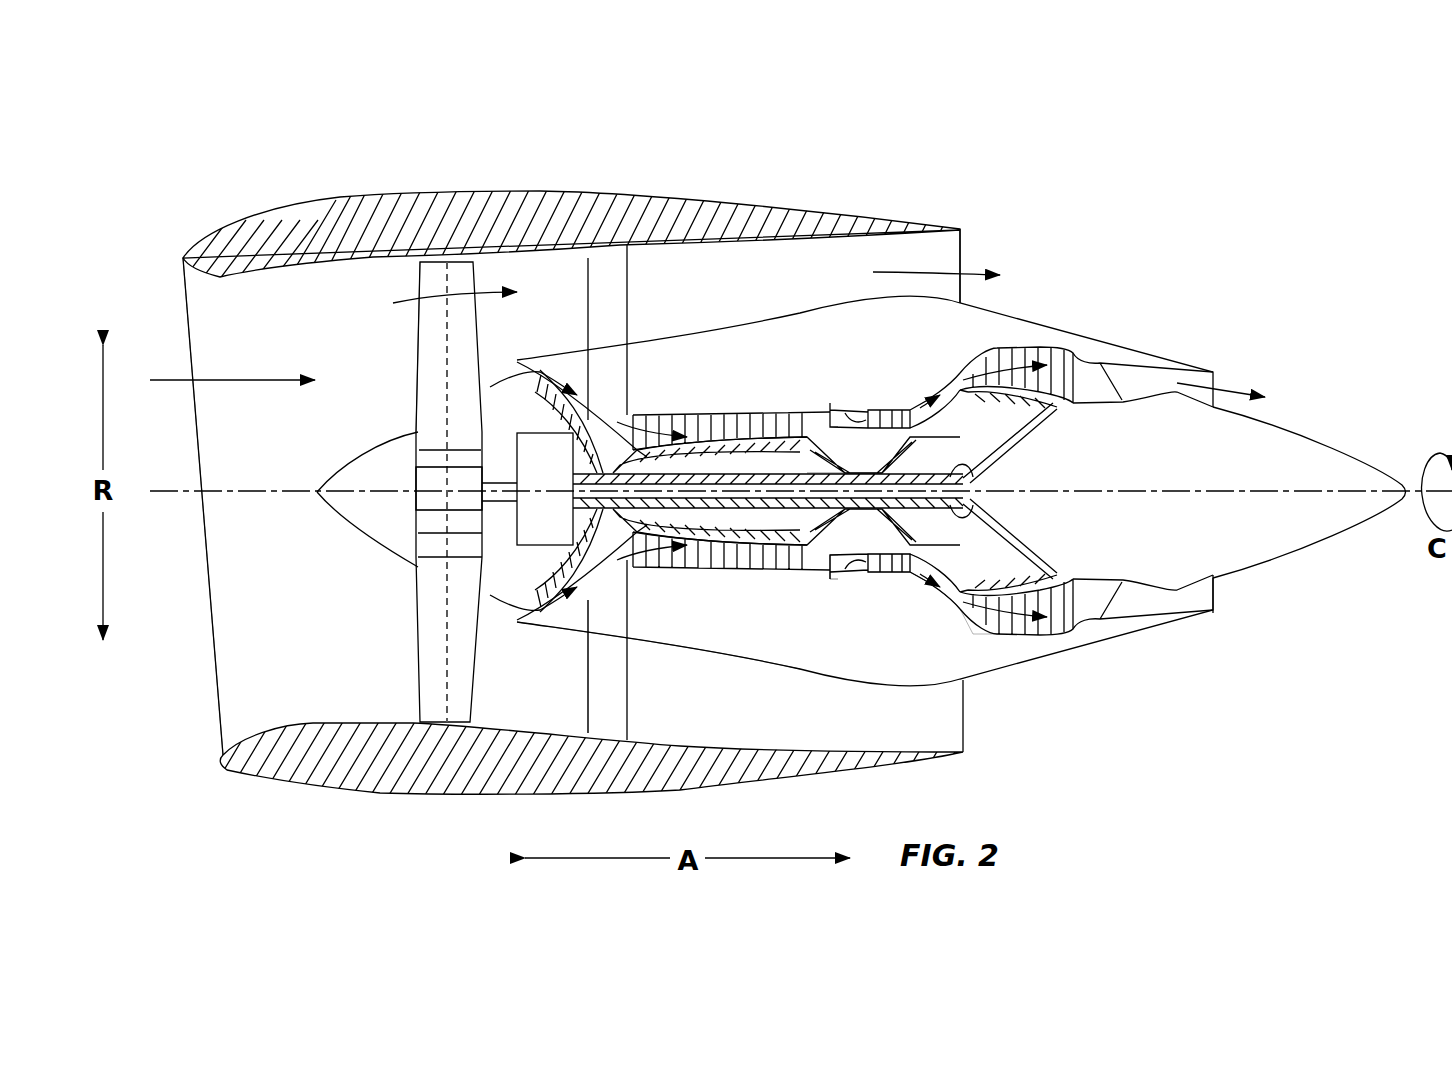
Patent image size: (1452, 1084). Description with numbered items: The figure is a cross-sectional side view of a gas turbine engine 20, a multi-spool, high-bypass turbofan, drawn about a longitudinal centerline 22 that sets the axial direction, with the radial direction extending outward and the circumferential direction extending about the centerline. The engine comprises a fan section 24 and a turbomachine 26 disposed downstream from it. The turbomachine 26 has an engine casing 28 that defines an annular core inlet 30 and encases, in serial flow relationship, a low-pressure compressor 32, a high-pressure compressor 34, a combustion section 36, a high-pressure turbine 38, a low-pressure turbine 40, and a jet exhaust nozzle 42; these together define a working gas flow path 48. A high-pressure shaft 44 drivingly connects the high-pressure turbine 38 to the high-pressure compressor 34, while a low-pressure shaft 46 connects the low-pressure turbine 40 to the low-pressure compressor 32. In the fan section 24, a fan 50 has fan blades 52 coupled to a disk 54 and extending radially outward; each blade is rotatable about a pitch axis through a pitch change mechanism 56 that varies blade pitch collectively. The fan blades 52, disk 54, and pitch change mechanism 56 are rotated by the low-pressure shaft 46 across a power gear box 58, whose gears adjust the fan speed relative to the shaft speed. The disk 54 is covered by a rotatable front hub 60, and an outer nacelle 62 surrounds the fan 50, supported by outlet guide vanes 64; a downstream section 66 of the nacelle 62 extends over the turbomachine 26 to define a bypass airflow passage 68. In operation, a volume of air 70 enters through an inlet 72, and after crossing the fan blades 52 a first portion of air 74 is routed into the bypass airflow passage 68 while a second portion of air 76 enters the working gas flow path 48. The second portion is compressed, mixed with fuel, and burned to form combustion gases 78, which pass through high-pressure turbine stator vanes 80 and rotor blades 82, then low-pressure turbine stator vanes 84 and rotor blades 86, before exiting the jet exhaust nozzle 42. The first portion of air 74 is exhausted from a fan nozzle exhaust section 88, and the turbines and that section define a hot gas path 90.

The gas turbine engine 20 is at (1125, 205).
The longitudinal centerline 22 is at (1150, 490).
The fan section 24 is at (370, 290).
The turbomachine 26 is at (767, 365).
The engine casing 28 is at (810, 672).
The annular core inlet 30 is at (530, 606).
The low-pressure compressor 32 is at (580, 547).
The high-pressure compressor 34 is at (661, 550).
The combustion section 36 is at (843, 575).
The high-pressure turbine 38 is at (915, 570).
The low-pressure turbine 40 is at (1053, 630).
The jet exhaust nozzle 42 is at (1120, 612).
The high-pressure shaft 44 is at (888, 457).
The low-pressure shaft 46 is at (975, 455).
The working gas flow path 48 is at (618, 560).
The fan 50 is at (390, 492).
The fan blades 52 is at (418, 657).
The disk 54 is at (438, 441).
The pitch change mechanism 56 is at (418, 480).
The power gear box 58 is at (600, 414).
The front hub 60 is at (338, 504).
The outer nacelle 62 is at (470, 795).
The outlet guide vanes 64 is at (628, 285).
The downstream section 66 is at (905, 228).
The bypass airflow passage 68 is at (795, 287).
The volume of air 70 is at (178, 379).
The inlet 72 is at (216, 722).
The first portion of air 74 is at (436, 298).
The second portion of air 76 is at (512, 372).
The combustion gases 78 is at (1008, 345).
The HP turbine stator vanes 80 is at (870, 565).
The HP turbine rotor blades 82 is at (890, 550).
The LP turbine stator vanes 84 is at (966, 612).
The LP turbine rotor blades 86 is at (983, 620).
The fan nozzle exhaust section 88 is at (963, 243).
The hot gas path 90 is at (947, 388).